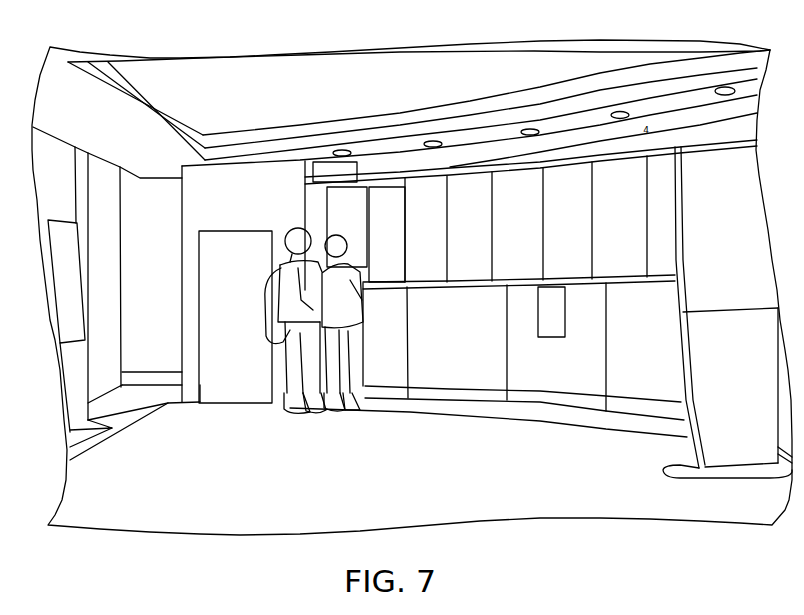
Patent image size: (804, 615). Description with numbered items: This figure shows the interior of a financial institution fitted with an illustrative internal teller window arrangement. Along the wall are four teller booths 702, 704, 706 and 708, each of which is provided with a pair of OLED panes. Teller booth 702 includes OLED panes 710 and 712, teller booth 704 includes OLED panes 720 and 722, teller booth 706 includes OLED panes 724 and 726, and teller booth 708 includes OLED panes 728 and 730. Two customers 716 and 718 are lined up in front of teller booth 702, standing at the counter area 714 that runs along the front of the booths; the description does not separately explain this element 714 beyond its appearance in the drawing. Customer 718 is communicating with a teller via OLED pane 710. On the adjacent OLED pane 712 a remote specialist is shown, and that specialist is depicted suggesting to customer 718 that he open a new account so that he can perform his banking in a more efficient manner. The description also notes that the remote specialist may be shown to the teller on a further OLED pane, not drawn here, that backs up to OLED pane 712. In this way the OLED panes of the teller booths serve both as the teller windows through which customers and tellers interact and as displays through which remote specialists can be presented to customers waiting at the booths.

The teller booth 702 is at (395, 163).
The teller booth 704 is at (482, 157).
The teller booth 706 is at (584, 145).
The teller booth 708 is at (639, 63).
The OLED pane 710 is at (345, 227).
The OLED pane 712 is at (388, 272).
The service counter 714 is at (382, 372).
The customer 716 is at (287, 366).
The customer 718 is at (350, 303).
The OLED pane 720 is at (422, 268).
The OLED pane 722 is at (463, 267).
The OLED pane 724 is at (510, 268).
The OLED pane 726 is at (569, 263).
The OLED pane 728 is at (614, 263).
The OLED pane 730 is at (672, 263).